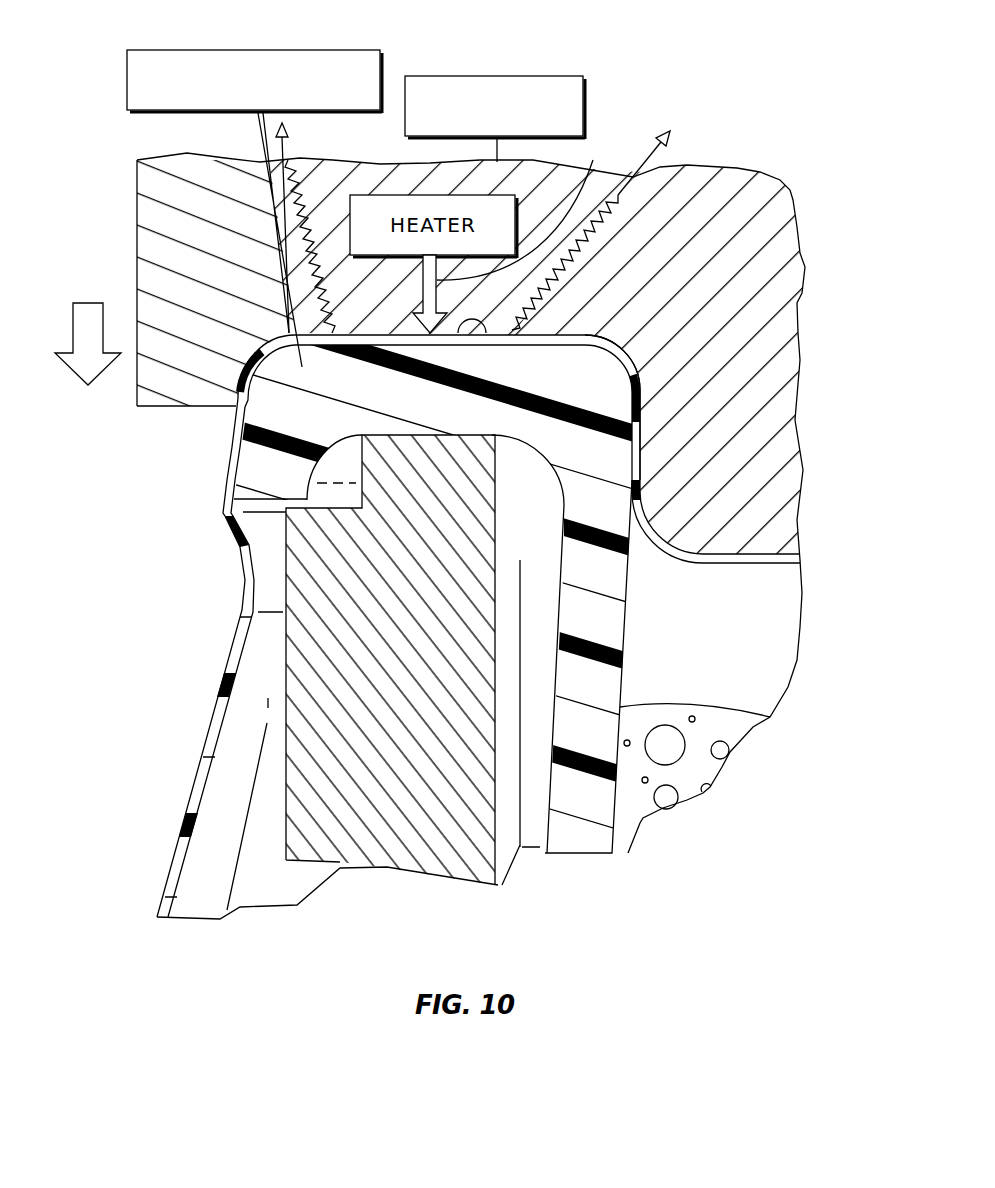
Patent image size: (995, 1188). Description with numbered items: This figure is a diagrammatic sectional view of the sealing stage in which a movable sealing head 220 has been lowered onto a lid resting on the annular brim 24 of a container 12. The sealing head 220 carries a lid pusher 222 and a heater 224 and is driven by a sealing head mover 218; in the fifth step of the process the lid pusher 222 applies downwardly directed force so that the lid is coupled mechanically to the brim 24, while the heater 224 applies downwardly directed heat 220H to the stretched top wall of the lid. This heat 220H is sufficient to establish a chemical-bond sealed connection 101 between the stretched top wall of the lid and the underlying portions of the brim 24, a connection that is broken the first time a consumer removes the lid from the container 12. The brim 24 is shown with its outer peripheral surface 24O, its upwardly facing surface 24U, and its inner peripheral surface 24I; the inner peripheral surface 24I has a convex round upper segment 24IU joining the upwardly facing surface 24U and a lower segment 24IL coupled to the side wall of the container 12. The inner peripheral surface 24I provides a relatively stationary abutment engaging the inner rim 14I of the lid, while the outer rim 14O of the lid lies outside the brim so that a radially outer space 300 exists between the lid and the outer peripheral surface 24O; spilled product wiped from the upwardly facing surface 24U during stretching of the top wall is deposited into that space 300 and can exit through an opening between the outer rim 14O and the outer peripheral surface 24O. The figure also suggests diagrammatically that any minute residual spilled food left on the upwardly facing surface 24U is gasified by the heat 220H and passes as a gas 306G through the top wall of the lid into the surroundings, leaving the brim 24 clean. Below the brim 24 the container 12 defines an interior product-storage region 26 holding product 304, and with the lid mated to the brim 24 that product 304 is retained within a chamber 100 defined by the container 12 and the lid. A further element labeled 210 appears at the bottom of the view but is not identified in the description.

The chemical-bond sealed connection 101 is at (318, 50).
The movable sealing head 220 is at (122, 193).
The lid pusher 222 is at (160, 401).
The radially outer space 300 is at (252, 346).
The gas 306G is at (291, 152).
The heater 224 is at (400, 195).
The sealing head mover 218 is at (584, 103).
The downwardly directed heat 220H is at (532, 211).
The inner rim 14I is at (556, 316).
The outer rim 14O is at (212, 479).
The annular brim 24 is at (423, 450).
The outer peripheral surface 24O is at (235, 452).
The upwardly facing surface 24U is at (486, 346).
The inner peripheral surface 24I is at (748, 450).
The upper segment of inner peripheral surface 24IU is at (612, 368).
The lower segment of inner peripheral surface 24IL is at (637, 474).
The interior product-storage region 26 is at (778, 610).
The product 304 is at (696, 717).
The chamber 100 is at (760, 695).
The container 12 is at (577, 865).
The support 210 is at (343, 878).